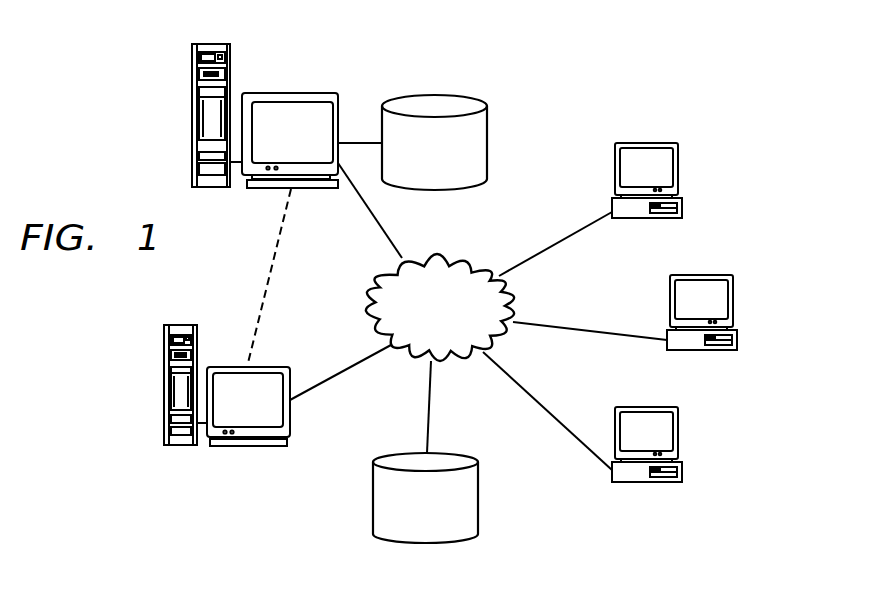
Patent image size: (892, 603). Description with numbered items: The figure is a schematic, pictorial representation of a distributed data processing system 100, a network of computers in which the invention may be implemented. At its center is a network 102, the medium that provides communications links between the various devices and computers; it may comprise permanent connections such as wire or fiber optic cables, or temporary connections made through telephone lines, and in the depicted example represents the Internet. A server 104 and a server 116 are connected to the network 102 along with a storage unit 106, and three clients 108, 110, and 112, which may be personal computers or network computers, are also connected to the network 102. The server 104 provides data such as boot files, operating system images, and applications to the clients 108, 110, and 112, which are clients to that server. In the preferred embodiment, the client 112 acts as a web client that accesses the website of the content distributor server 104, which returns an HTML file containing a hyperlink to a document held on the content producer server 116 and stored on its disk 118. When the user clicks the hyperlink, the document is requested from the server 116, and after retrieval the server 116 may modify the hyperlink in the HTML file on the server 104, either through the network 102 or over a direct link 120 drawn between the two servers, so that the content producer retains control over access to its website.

The distributed data processing system 100 is at (554, 78).
The network 102 is at (478, 265).
The server 104 is at (164, 385).
The storage unit 106 is at (478, 499).
The client 108 is at (678, 170).
The client 110 is at (733, 300).
The client 112 is at (678, 432).
The server 116 is at (192, 124).
The disk 118 is at (487, 146).
The direct link 120 is at (268, 276).